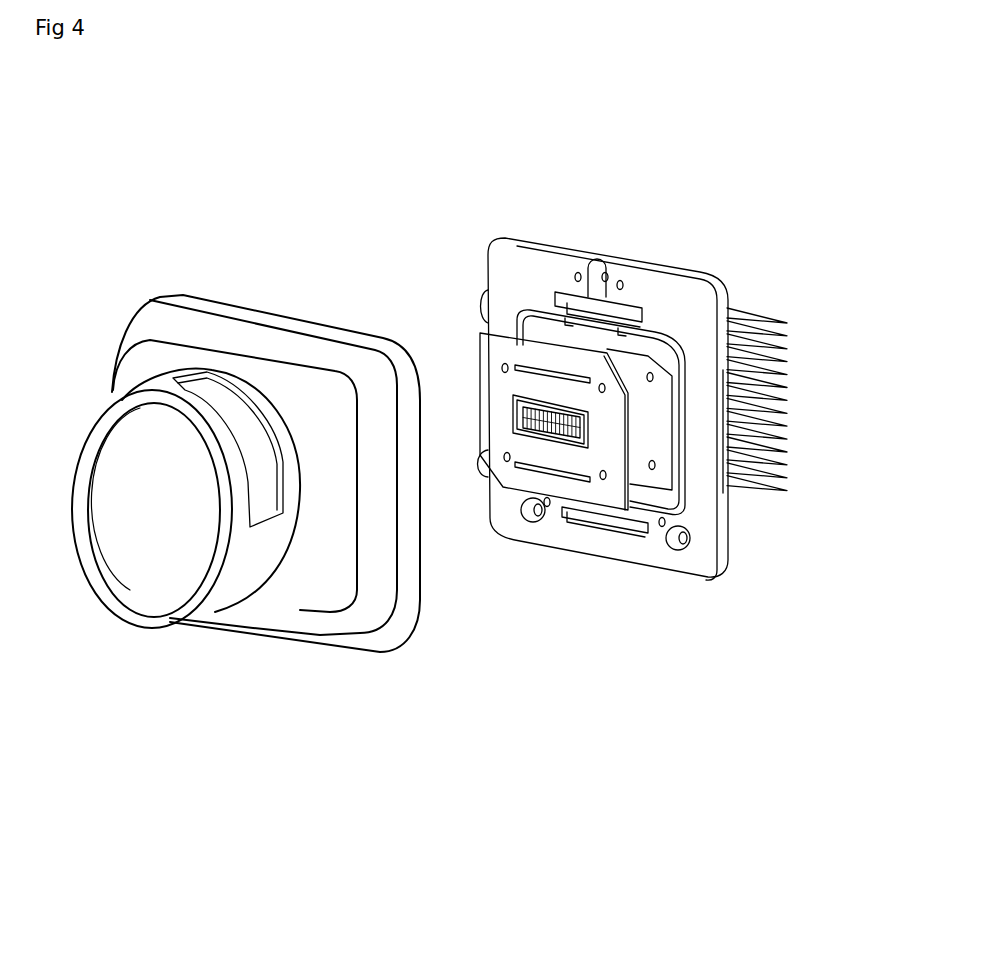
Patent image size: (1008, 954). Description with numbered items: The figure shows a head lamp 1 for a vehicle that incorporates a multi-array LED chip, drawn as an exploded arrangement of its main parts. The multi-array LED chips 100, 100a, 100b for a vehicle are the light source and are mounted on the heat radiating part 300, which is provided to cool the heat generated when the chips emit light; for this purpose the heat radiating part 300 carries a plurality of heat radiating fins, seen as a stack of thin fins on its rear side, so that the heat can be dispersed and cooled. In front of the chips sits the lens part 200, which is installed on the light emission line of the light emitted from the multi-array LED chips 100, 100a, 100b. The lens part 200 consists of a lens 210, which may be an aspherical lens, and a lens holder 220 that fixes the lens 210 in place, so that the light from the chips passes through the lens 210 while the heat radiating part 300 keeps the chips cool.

The head lamp 1 is at (299, 154).
The multi-array LED chip 100 is at (572, 483).
The multi-array LED chip 100a is at (597, 492).
The multi-array LED chip 100b is at (622, 512).
The lens part 200 is at (218, 753).
The lens 210 is at (157, 583).
The lens holder 220 is at (295, 606).
The heat radiating part 300 is at (662, 293).